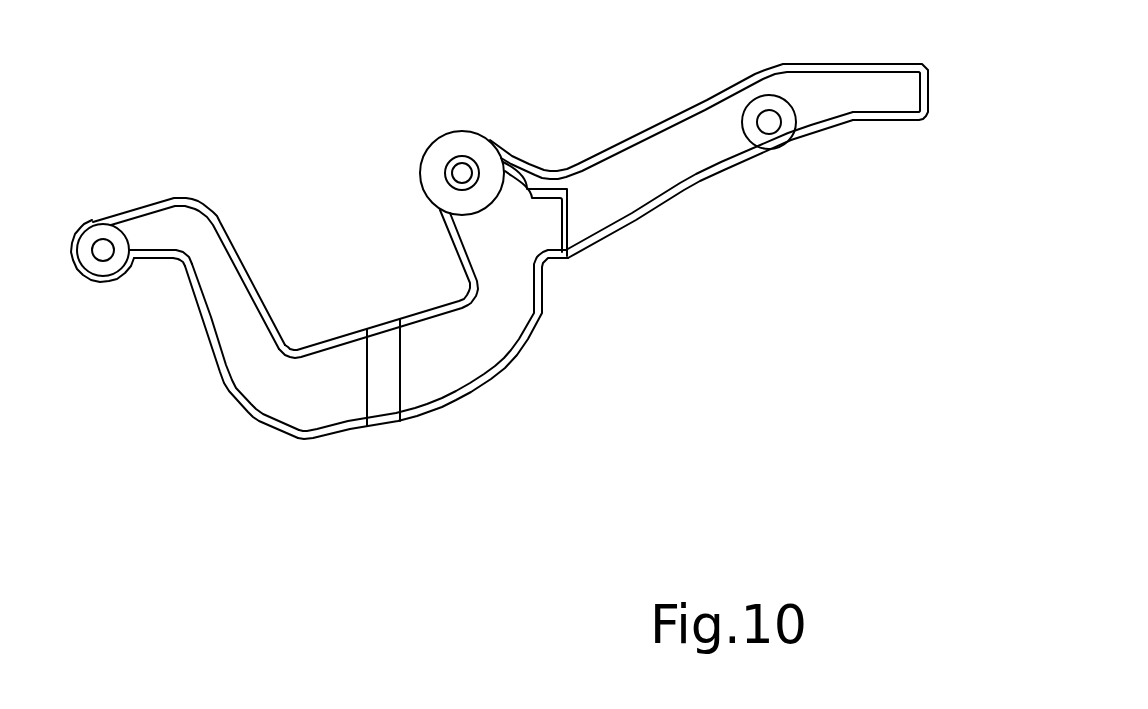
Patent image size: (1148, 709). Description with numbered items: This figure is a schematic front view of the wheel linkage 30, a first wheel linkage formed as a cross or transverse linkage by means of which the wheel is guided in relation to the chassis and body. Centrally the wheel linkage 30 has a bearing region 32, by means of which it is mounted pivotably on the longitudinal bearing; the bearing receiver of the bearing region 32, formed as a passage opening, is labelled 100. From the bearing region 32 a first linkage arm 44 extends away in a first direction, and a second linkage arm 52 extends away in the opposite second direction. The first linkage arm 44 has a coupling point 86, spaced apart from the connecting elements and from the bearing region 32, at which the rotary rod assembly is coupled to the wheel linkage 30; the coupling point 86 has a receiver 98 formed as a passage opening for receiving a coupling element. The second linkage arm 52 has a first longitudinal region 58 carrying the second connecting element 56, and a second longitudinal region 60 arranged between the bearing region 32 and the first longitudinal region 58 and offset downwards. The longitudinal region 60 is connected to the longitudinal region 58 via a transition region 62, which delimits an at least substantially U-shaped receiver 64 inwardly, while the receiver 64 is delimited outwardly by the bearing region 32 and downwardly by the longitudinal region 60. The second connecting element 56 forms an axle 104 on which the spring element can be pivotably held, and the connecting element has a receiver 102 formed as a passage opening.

The wheel linkage 30 is at (560, 157).
The bearing region 32 is at (463, 119).
The first linkage arm 44 is at (695, 195).
The second linkage arm 52 is at (302, 451).
The second connecting element 56 is at (98, 226).
The first longitudinal region 58 is at (150, 262).
The second longitudinal region 60 is at (420, 413).
The transition region 62 is at (232, 347).
The receiver 64 is at (322, 215).
The coupling point 86 is at (769, 149).
The receiver 98 is at (769, 110).
The bearing receiver 100 is at (442, 189).
The receiver 102 is at (103, 268).
The axle 104 is at (160, 205).